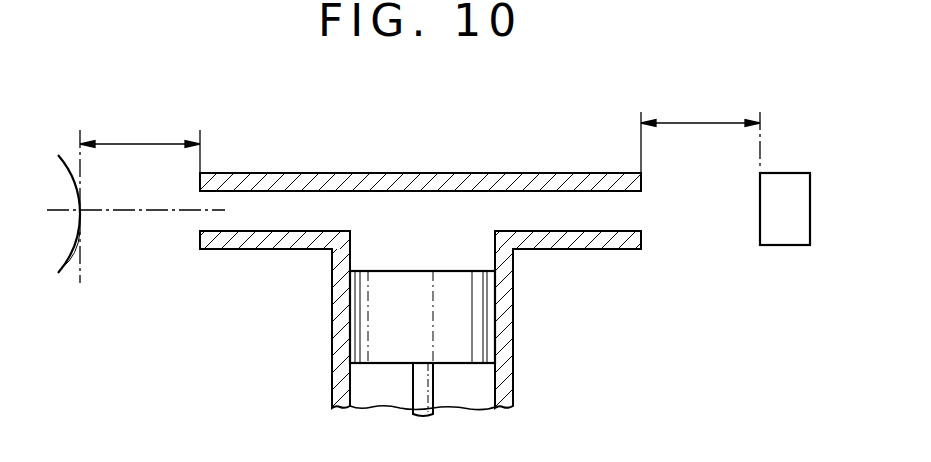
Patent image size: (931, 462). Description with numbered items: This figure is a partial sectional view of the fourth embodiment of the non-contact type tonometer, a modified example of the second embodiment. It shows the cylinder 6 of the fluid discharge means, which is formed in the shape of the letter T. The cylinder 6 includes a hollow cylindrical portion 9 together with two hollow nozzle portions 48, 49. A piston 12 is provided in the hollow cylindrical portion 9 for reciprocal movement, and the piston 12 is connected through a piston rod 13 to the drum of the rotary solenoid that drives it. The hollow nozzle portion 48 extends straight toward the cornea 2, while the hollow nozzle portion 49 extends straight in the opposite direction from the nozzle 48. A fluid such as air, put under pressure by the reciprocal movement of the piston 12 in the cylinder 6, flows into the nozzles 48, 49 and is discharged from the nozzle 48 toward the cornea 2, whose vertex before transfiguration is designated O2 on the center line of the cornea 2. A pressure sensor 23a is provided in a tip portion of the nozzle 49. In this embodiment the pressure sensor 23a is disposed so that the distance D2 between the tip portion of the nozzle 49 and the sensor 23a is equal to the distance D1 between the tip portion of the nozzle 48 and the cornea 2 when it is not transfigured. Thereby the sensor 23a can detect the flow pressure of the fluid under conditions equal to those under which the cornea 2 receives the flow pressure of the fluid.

The cornea 2 is at (80, 262).
The vertex of the cornea before transfiguration O2 is at (80, 210).
The distance between nozzle tip and cornea D1 is at (145, 140).
The cylinder 6 is at (472, 171).
The hollow nozzle portion 48 is at (300, 197).
The hollow nozzle portion 49 is at (588, 172).
The hollow cylindrical portion 9 is at (477, 259).
The piston 12 is at (390, 357).
The piston rod 13 is at (435, 398).
The distance between nozzle tip and sensor D2 is at (706, 120).
The pressure sensor 23a is at (790, 236).